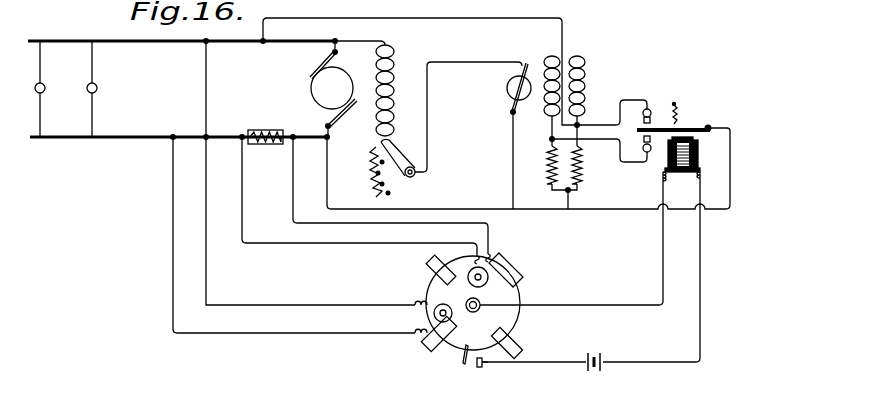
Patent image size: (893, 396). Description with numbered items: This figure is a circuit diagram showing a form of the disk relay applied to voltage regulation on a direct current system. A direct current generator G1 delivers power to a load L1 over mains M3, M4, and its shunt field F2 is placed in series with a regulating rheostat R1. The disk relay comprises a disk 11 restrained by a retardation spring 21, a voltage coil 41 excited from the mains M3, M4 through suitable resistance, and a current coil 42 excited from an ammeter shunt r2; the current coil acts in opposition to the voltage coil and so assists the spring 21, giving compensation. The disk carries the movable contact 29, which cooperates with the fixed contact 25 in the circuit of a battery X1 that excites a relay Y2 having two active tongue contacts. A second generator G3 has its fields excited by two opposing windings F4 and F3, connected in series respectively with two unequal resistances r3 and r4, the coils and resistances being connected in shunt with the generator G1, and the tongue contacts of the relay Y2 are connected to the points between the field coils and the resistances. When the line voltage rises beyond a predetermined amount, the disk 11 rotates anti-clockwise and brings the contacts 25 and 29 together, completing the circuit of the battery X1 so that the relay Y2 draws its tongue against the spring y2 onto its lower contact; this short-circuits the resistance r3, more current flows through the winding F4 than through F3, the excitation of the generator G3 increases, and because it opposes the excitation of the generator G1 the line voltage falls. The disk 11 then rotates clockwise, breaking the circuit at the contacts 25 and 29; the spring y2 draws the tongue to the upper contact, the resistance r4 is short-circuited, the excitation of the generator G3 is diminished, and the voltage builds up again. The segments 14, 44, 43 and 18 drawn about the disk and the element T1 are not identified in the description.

The load L1 is at (96, 85).
The main M3 is at (175, 43).
The main M4 is at (137, 140).
The ammeter shunt r2 is at (263, 144).
The direct current generator G1 is at (315, 89).
The shunt field F2 is at (397, 56).
The regulating rheostat R1 is at (393, 161).
The generator G3 is at (505, 89).
The field winding F3 is at (586, 88).
The field coil F4 is at (548, 105).
The resistance r3 is at (584, 169).
The resistance r4 is at (588, 167).
The spring y2 is at (666, 101).
The relay Y2 is at (677, 138).
The disk 11 is at (505, 301).
The retardation spring 21 is at (468, 302).
The current coil 42 is at (489, 281).
The voltage coil 41 is at (433, 314).
The contact segment 14 is at (428, 264).
The contact segment 44 is at (514, 262).
The contact segment 43 is at (431, 348).
The contact segment 18 is at (519, 337).
The movable contact 29 is at (464, 367).
The fixed contact 25 is at (485, 369).
The battery X1 is at (594, 349).
The terminals T1 is at (373, 330).